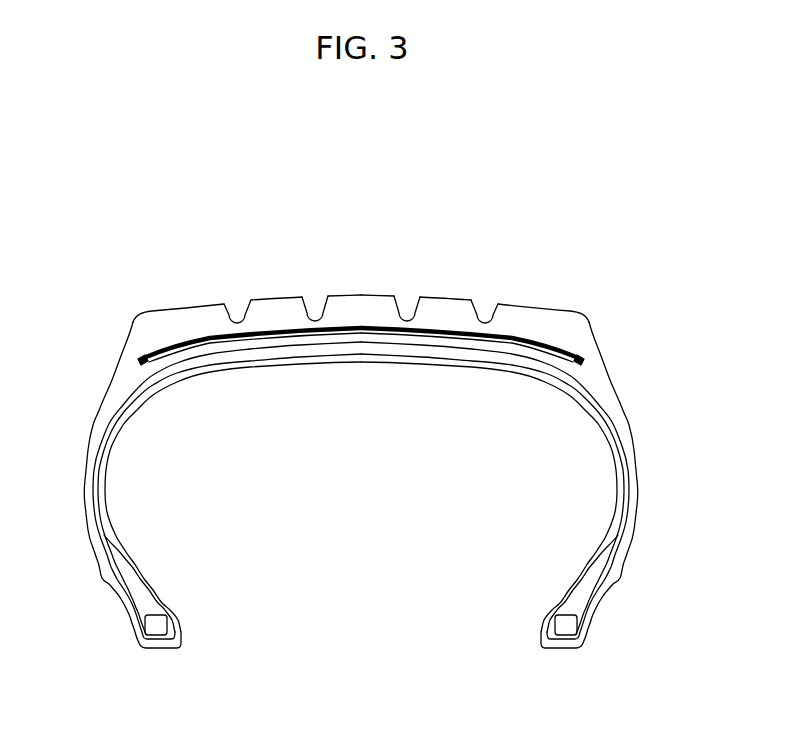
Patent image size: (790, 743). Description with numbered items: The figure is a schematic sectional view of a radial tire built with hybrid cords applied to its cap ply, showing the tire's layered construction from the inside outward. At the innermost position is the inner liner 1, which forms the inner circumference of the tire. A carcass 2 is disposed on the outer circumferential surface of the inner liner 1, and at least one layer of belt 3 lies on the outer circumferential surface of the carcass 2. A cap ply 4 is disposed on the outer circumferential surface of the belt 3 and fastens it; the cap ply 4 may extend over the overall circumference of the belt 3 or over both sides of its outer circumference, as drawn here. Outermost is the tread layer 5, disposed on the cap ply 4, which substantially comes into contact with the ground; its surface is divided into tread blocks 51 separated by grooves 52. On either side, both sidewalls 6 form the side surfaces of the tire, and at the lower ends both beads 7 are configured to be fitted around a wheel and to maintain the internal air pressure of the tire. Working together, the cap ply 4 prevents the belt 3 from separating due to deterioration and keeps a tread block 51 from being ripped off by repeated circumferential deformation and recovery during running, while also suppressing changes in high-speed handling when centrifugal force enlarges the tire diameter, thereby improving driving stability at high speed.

The inner liner 1 is at (348, 361).
The carcass 2 is at (298, 353).
The belt 3 is at (547, 336).
The cap ply 4 is at (455, 329).
The tread layer 5 is at (175, 304).
The tread block 51 is at (343, 295).
The tread groove 52 is at (315, 304).
The sidewalls 6 is at (85, 480).
The beads 7 is at (152, 627).